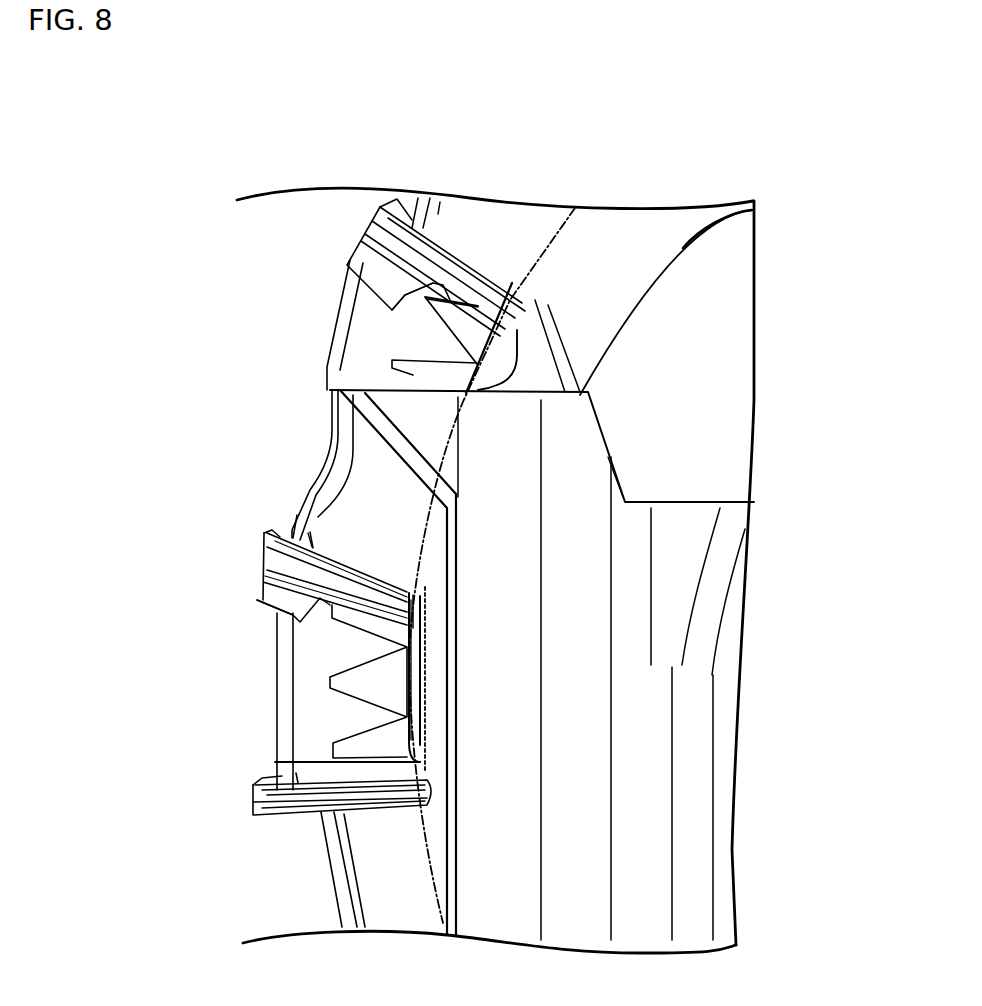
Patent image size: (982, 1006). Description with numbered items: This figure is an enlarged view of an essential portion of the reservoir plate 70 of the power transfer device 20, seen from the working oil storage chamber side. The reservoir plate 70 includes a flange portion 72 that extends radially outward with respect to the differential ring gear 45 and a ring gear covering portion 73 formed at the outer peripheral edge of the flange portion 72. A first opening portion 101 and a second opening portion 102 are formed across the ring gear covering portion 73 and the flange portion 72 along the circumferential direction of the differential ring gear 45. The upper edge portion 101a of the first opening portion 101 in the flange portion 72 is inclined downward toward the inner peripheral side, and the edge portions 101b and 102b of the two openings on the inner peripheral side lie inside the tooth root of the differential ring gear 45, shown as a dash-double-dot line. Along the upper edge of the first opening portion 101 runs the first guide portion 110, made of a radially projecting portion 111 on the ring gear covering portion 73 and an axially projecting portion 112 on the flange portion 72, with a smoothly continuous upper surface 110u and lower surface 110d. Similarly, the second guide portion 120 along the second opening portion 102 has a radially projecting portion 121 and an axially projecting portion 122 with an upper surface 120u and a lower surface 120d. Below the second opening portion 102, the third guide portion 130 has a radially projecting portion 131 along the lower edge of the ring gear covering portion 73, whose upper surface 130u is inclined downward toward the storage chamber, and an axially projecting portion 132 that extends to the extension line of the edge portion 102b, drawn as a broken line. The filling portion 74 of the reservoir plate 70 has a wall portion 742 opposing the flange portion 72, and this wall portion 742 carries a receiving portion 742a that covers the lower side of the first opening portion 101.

The power transfer device 20 is at (183, 154).
The reservoir plate 70 is at (322, 214).
The filling portion 74 is at (766, 604).
The wall portion 742 is at (565, 817).
The receiving portion 742a is at (415, 413).
The first guide portion 110 is at (246, 210).
The radially projecting portion 111 is at (375, 229).
The axially projecting portion 112 is at (442, 268).
The upper surface 110u is at (403, 218).
The lower surface 110d is at (415, 276).
The first opening portion 101 is at (378, 346).
The upper edge portion 101a is at (463, 295).
The edge portion 101b is at (497, 362).
The differential ring gear 45 is at (393, 364).
The second guide portion 120 is at (153, 535).
The radially projecting portion 121 is at (262, 557).
The axially projecting portion 122 is at (360, 585).
The upper surface 120u is at (273, 545).
The lower surface 120d is at (293, 598).
The ring gear covering portion 73 is at (277, 713).
The second opening portion 102 is at (298, 692).
The edge portion 102b is at (420, 685).
The third guide portion 130 is at (153, 775).
The radially projecting portion 131 is at (267, 793).
The axially projecting portion 132 is at (350, 801).
The upper surface 130u is at (270, 787).
The flange portion 72 is at (390, 905).